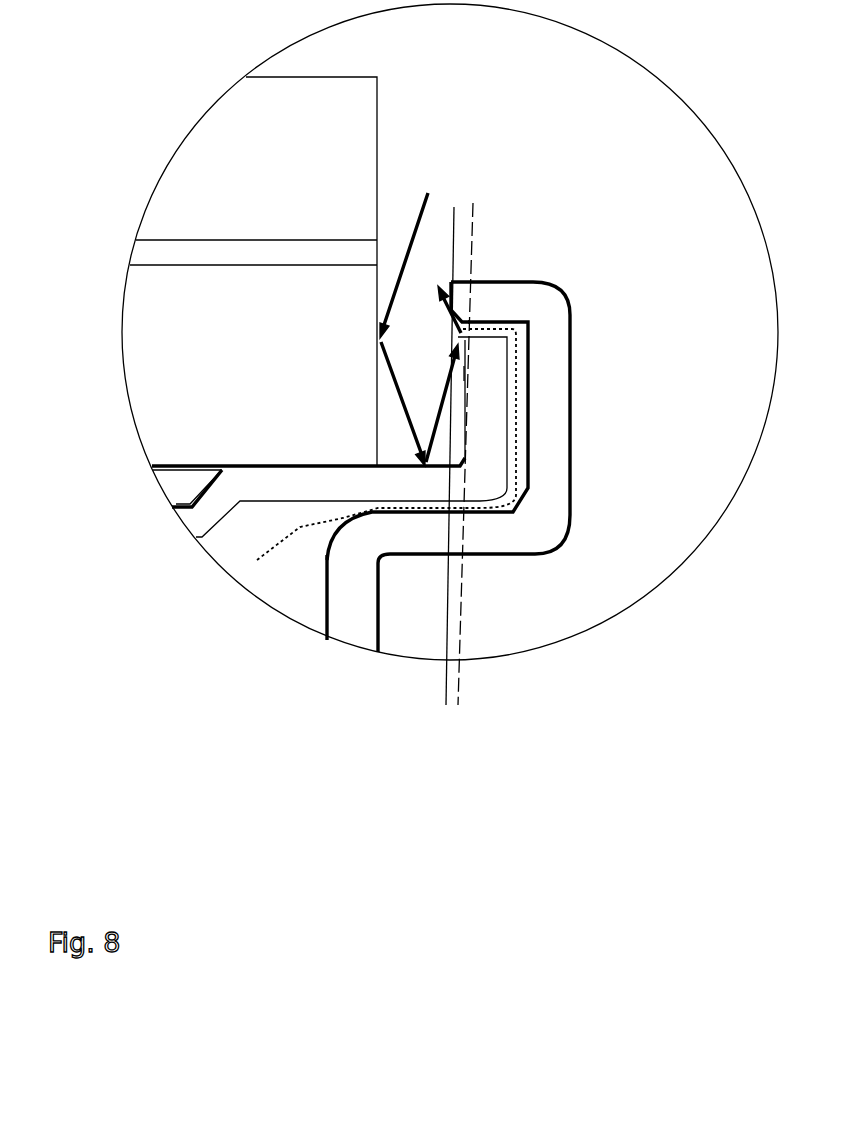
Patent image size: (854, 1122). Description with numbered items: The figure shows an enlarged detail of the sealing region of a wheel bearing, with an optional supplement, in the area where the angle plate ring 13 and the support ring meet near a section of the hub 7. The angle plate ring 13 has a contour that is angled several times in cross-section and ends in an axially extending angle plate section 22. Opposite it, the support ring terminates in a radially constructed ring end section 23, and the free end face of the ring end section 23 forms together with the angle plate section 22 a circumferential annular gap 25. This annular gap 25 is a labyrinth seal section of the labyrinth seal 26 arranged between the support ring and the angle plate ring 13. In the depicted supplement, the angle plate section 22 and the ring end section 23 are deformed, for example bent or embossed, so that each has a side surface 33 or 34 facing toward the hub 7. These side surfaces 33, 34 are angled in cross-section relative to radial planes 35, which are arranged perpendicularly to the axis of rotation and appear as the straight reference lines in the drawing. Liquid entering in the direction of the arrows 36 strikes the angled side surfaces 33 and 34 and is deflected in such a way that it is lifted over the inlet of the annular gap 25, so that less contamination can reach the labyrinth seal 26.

The hub 7 is at (354, 458).
The angle plate ring 13 is at (348, 615).
The angle plate section 22 is at (497, 292).
The ring end section 23 is at (492, 402).
The annular gap 25 is at (540, 332).
The labyrinth seal 26 is at (277, 550).
The side surface 33 is at (457, 313).
The side surface 34 is at (464, 373).
The radial planes 35 is at (447, 702).
The arrows 36 is at (428, 195).